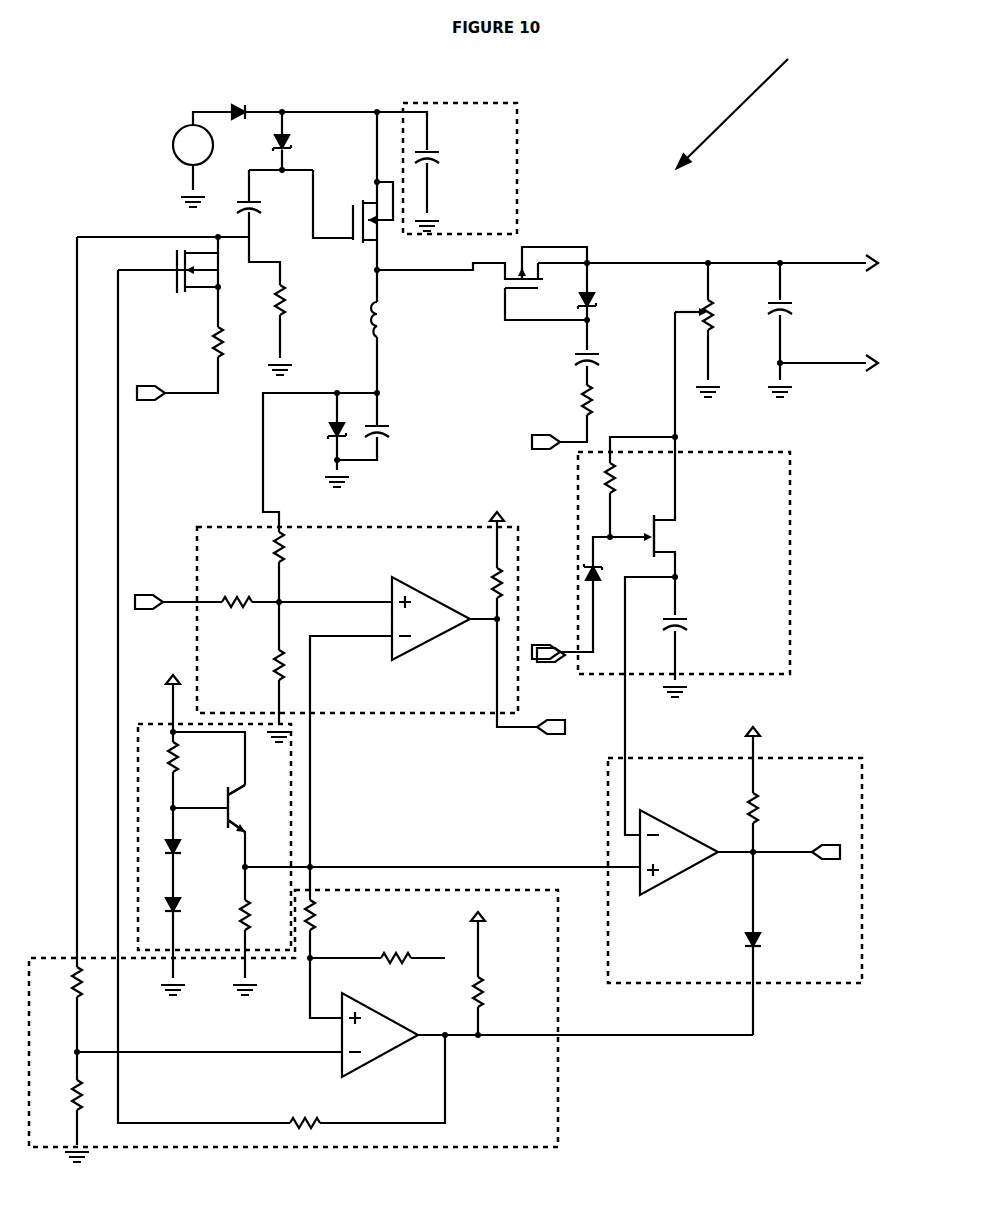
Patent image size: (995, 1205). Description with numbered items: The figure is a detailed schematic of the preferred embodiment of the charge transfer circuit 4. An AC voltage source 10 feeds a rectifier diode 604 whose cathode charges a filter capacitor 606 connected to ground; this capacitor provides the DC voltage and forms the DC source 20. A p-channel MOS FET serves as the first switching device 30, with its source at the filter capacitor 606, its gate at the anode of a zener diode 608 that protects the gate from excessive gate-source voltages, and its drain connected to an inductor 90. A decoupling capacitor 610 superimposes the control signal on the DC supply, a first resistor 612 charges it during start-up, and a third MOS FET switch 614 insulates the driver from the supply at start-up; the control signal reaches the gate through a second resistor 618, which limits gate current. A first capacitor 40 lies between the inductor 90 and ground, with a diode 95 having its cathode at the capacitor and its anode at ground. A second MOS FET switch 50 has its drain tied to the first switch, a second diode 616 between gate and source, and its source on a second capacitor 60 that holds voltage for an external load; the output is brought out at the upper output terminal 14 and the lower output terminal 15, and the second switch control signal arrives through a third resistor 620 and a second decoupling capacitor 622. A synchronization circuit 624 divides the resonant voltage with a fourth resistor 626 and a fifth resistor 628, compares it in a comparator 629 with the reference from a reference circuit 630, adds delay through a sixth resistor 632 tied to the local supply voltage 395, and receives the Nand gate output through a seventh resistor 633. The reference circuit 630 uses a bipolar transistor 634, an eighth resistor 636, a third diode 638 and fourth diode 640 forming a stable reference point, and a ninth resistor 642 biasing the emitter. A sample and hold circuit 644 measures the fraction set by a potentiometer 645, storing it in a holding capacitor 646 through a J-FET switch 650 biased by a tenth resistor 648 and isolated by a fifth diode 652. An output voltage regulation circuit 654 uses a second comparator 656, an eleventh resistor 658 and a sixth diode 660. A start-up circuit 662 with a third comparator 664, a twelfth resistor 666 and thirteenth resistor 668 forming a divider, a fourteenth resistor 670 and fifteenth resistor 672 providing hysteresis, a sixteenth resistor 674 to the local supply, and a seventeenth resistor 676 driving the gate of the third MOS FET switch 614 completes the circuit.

The charge transfer circuit 4 is at (738, 103).
The AC voltage source 10 is at (180, 137).
The output terminal 14 is at (848, 262).
The output terminal 15 is at (848, 362).
The DC source 20 is at (517, 135).
The first switching device 30 is at (380, 226).
The first capacitor 40 is at (392, 424).
The second MOS FET switch 50 is at (503, 283).
The second capacitor 60 is at (795, 312).
The inductor 90 is at (385, 310).
The diode 95 is at (328, 432).
The local supply voltage 395 is at (493, 509).
The rectifier diode 604 is at (247, 104).
The filter capacitor 606 is at (440, 160).
The zener diode 608 is at (292, 142).
The decoupling capacitor 610 is at (262, 213).
The first resistor 612 is at (290, 303).
The third MOS FET switch 614 is at (196, 292).
The second diode 616 is at (597, 300).
The second resistor 618 is at (222, 348).
The third resistor 620 is at (578, 401).
The second decoupling capacitor 622 is at (575, 363).
The synchronization circuit 624 is at (390, 716).
The fourth resistor 626 is at (288, 545).
The fifth resistor 628 is at (272, 663).
The comparator 629 is at (390, 579).
The reference circuit 630 is at (291, 808).
The sixth resistor 632 is at (492, 579).
The seventh resistor 633 is at (235, 597).
The bipolar transistor 634 is at (246, 797).
The eighth resistor 636 is at (180, 752).
The third diode 638 is at (180, 851).
The fourth diode 640 is at (180, 909).
The ninth resistor 642 is at (250, 906).
The sample and hold circuit 644 is at (790, 502).
The potentiometer 645 is at (713, 325).
The holding capacitor 646 is at (690, 628).
The tenth resistor 648 is at (618, 470).
The J-FET switch 650 is at (672, 526).
The fifth diode 652 is at (582, 575).
The output voltage regulation circuit 654 is at (790, 985).
The second comparator 656 is at (673, 880).
The eleventh resistor 658 is at (762, 800).
The sixth diode 660 is at (762, 942).
The start-up circuit 662 is at (558, 1113).
The third comparator 664 is at (370, 1063).
The twelfth resistor 666 is at (70, 979).
The thirteenth resistor 668 is at (70, 1101).
The fourteenth resistor 670 is at (320, 920).
The fifteenth resistor 672 is at (403, 968).
The sixteenth resistor 674 is at (488, 987).
The seventeenth resistor 676 is at (304, 1120).